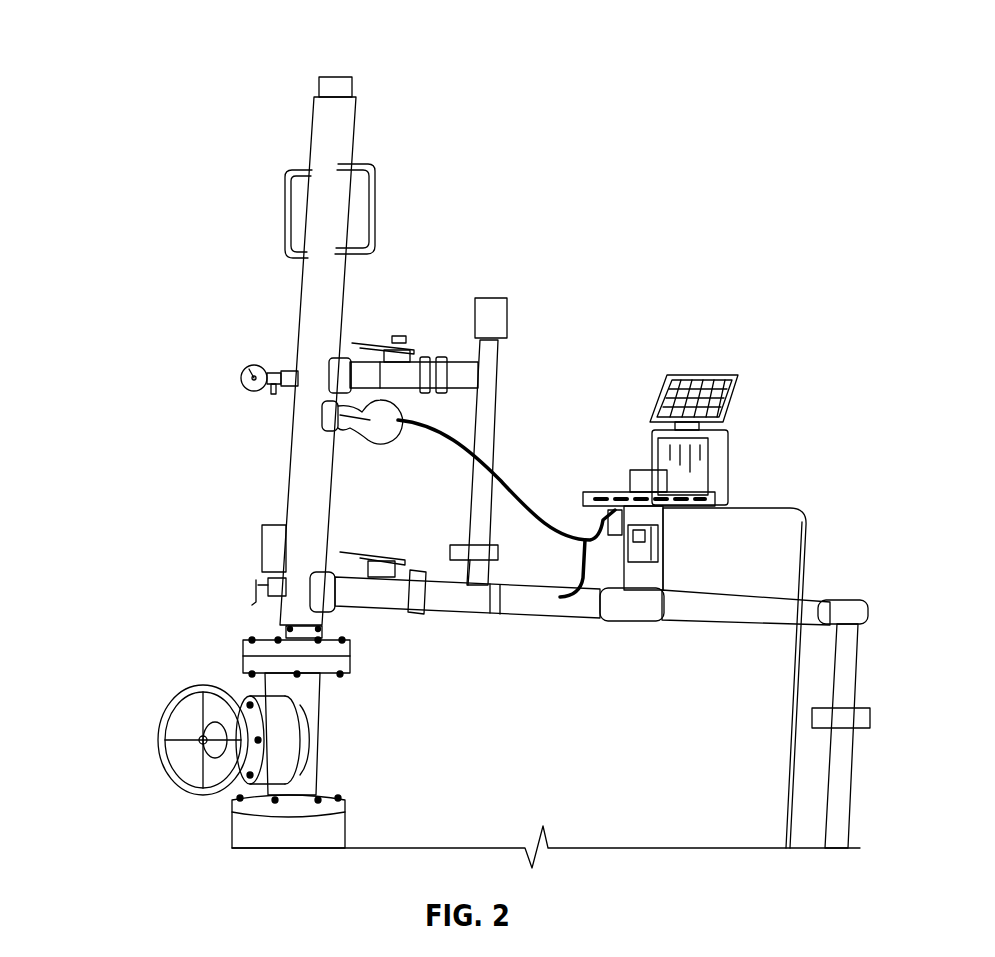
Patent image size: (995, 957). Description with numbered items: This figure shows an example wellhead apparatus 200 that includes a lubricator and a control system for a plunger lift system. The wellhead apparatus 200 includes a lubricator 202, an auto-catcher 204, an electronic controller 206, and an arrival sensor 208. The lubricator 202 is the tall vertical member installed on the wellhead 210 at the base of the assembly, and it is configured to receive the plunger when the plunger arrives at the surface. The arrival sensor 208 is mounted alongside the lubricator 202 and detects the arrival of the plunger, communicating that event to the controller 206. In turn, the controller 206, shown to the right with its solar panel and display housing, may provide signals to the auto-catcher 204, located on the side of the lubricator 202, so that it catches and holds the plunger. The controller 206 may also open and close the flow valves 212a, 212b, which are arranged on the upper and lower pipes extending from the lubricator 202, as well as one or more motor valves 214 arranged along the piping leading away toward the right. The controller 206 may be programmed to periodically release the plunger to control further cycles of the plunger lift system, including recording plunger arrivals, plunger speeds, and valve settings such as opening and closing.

The wellhead apparatus 200 is at (116, 36).
The lubricator 202 is at (314, 133).
The auto-catcher 204 is at (365, 426).
The electronic controller 206 is at (745, 432).
The arrival sensor 208 is at (262, 540).
The wellhead 210 is at (335, 656).
The flow valve 212a is at (432, 345).
The flow valve 212b is at (415, 608).
The motor valve 214 is at (652, 543).